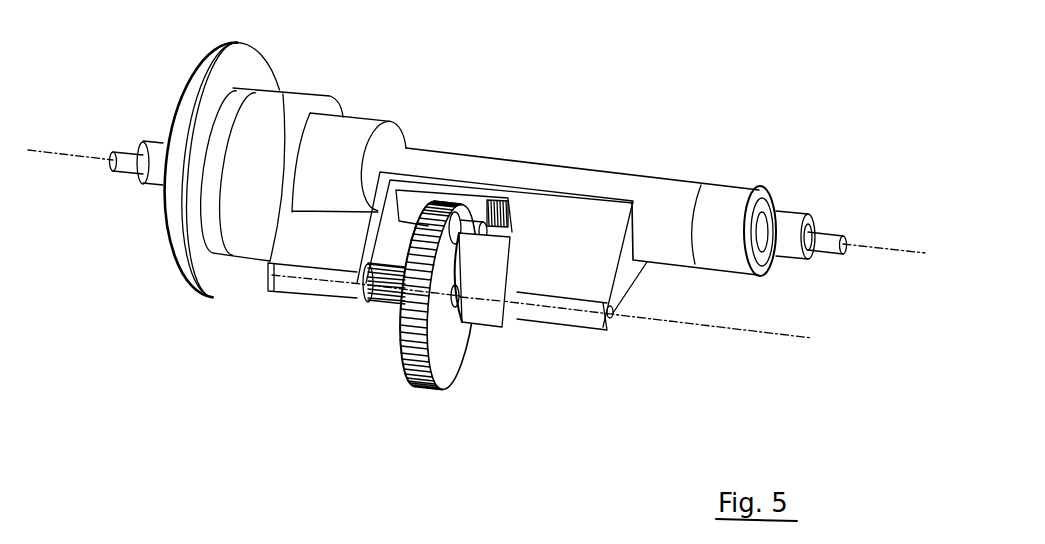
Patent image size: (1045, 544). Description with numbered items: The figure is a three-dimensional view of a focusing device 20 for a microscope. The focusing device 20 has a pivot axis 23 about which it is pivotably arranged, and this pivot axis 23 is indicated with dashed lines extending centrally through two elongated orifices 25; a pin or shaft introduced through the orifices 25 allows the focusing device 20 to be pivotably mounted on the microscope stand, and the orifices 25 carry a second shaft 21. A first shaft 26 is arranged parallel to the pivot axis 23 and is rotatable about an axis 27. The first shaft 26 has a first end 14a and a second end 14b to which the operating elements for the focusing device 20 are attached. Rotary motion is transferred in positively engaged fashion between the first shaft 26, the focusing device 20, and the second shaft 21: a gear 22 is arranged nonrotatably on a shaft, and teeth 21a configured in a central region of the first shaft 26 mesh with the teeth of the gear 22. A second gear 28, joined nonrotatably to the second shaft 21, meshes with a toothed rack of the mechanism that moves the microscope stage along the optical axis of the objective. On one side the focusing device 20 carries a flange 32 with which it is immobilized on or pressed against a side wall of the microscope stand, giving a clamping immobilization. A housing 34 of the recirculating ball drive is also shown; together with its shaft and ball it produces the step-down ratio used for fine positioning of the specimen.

The focusing device 20 is at (569, 94).
The first end 14a is at (133, 152).
The second end 14b is at (828, 233).
The second shaft 21 is at (451, 297).
The teeth 21a is at (497, 210).
The gear 22 is at (462, 347).
The pivot axis 23 is at (716, 330).
The elongated orifices 25 is at (268, 266).
The first shaft 26 is at (157, 143).
The axis 27 is at (68, 153).
The second gear 28 is at (393, 288).
The flange 32 is at (175, 237).
The housing 34 is at (283, 93).